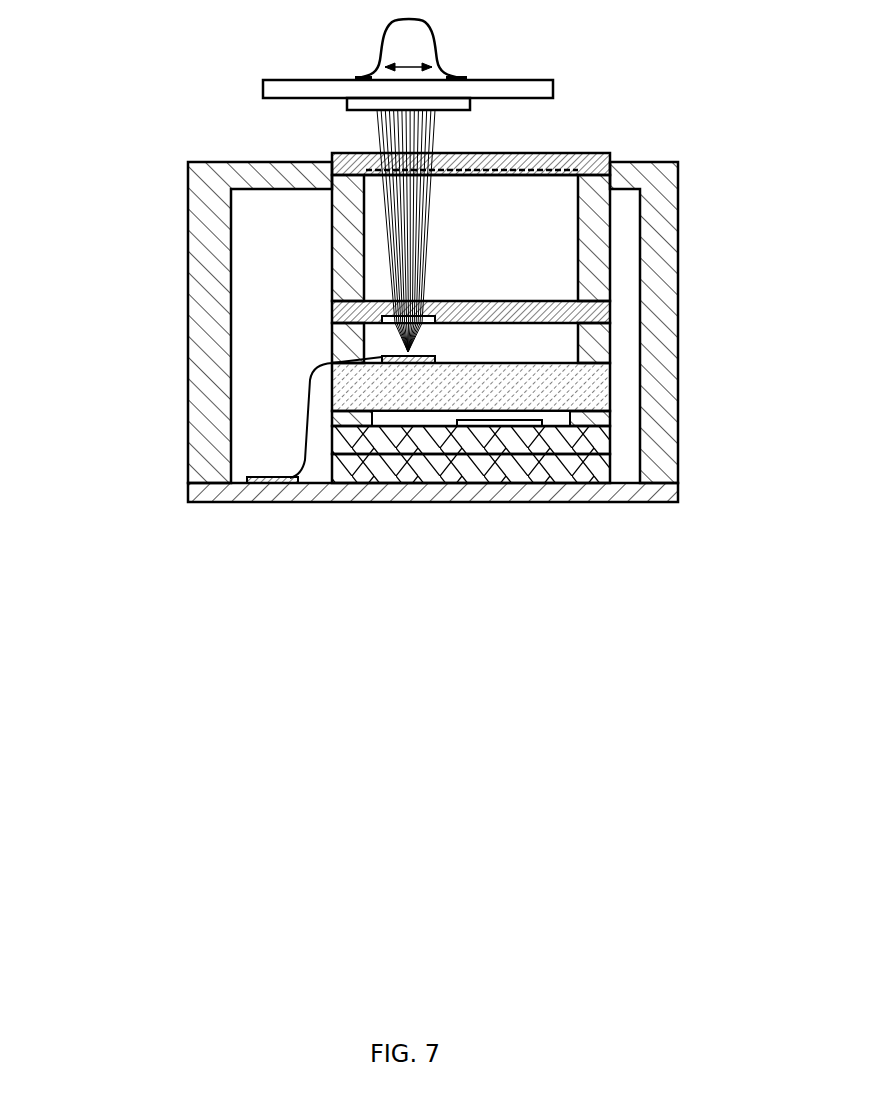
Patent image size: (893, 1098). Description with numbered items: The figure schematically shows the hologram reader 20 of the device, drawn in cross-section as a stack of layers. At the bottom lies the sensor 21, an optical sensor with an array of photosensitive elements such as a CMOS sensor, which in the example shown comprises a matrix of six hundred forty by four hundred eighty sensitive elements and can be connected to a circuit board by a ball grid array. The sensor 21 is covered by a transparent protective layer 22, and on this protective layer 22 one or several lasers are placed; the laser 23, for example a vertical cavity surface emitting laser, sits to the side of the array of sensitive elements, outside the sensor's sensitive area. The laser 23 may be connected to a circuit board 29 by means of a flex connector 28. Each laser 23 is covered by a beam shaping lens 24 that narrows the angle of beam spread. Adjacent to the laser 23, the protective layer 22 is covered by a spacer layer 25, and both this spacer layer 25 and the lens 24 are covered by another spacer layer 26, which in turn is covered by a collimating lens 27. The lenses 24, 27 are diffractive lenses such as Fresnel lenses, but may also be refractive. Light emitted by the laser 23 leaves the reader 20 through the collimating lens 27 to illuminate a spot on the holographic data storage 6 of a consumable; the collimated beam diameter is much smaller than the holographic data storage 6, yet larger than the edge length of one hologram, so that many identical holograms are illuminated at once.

The holographic data storage 6 is at (543, 92).
The hologram reader 20 is at (188, 196).
The sensor 21 is at (610, 418).
The protective layer 22 is at (610, 378).
The laser 23 is at (382, 358).
The beam shaping lens 24 is at (335, 312).
The spacer layer 25 is at (565, 343).
The spacer layer 26 is at (563, 232).
The collimating lens 27 is at (353, 162).
The flex connector 28 is at (302, 452).
The circuit board 29 is at (420, 489).